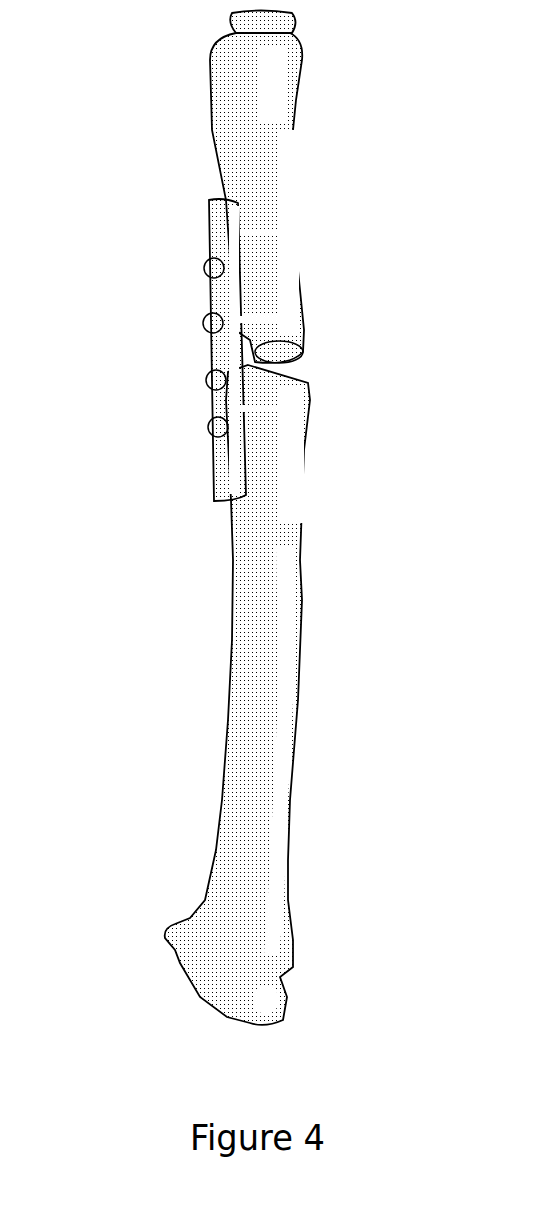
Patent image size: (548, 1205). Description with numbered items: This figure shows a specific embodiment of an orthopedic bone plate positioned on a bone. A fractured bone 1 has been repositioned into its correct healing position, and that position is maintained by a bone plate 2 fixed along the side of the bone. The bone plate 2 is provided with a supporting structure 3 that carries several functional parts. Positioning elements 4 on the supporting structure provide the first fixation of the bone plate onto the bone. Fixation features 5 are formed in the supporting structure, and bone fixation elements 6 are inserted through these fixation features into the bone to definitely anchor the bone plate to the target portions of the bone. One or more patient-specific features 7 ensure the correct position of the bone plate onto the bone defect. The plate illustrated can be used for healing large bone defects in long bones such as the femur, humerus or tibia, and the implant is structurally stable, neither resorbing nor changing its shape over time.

The bone 1 is at (277, 773).
The bone plate 2 is at (193, 218).
The bone plate supporting structure 3 is at (218, 234).
The bone plate positioning elements 4 is at (273, 233).
The bone plate fixation features 5 is at (210, 321).
The fixation elements 6 is at (272, 318).
The patient-specific features 7 is at (238, 410).